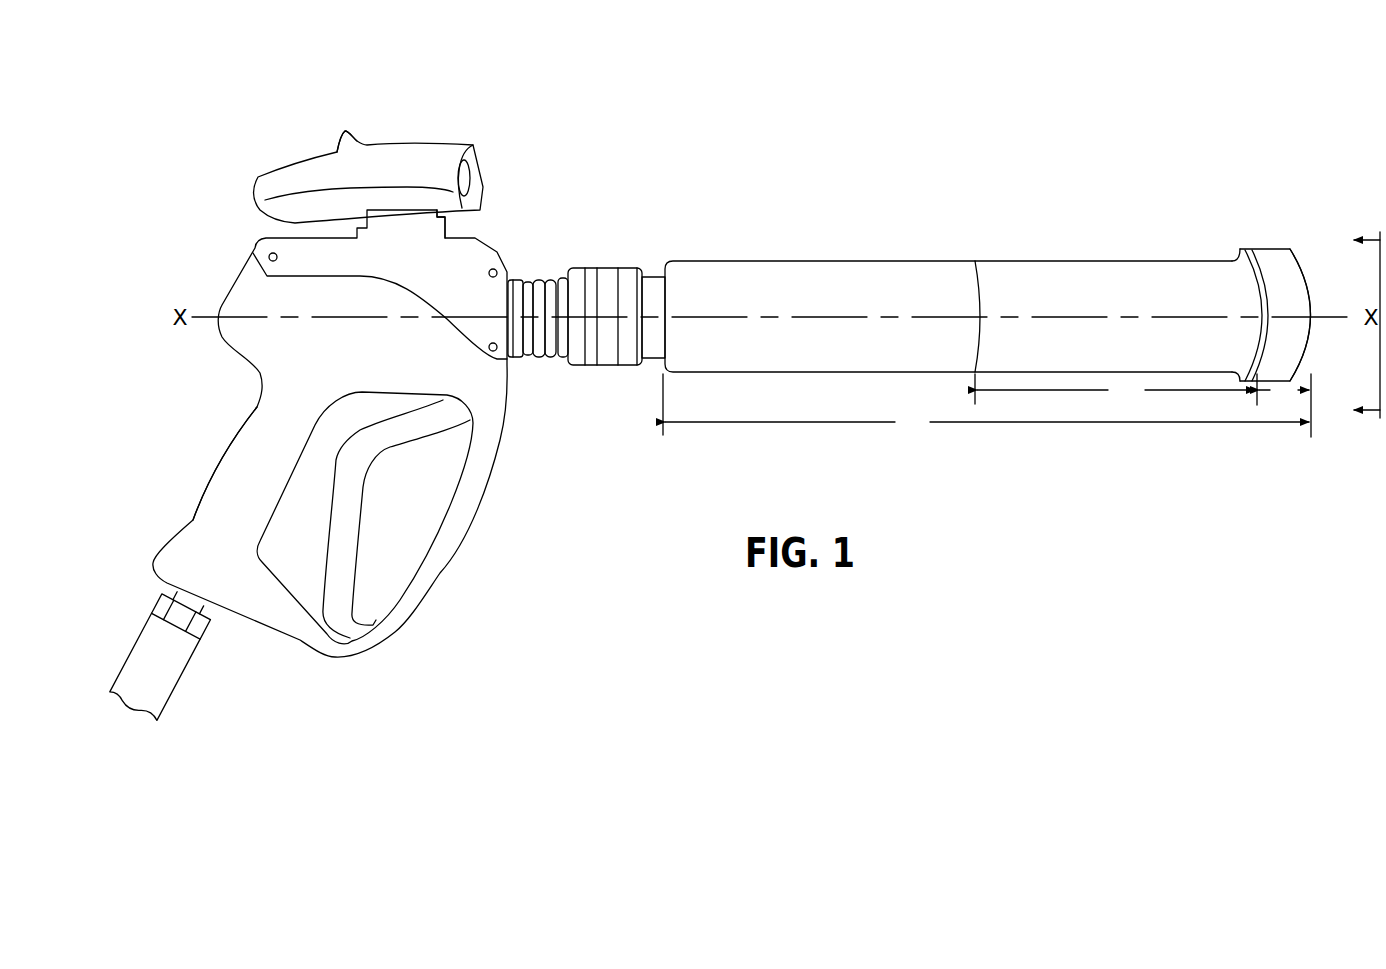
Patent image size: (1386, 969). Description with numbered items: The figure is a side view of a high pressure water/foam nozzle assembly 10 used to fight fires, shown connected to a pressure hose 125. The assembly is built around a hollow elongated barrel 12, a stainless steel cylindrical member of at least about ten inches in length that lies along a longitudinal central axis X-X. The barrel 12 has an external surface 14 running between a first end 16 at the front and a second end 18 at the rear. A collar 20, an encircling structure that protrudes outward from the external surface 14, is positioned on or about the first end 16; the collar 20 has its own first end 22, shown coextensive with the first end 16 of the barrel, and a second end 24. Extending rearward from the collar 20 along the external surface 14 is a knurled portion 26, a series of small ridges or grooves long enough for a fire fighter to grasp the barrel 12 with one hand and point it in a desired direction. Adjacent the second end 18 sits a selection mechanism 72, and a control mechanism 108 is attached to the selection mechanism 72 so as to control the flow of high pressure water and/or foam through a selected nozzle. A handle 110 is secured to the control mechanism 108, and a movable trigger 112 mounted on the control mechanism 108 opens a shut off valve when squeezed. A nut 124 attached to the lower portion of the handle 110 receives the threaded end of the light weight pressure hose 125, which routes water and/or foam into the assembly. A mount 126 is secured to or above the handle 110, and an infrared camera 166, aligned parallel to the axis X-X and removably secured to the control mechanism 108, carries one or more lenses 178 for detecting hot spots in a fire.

The high pressure water/foam nozzle assembly 10 is at (1200, 108).
The hollow elongated barrel 12 is at (902, 256).
The external surface 14 is at (771, 273).
The first end 16 is at (1313, 310).
The second end 18 is at (662, 272).
The collar 20 is at (1292, 244).
The first end of collar 22 is at (1304, 266).
The second end of collar 24 is at (1238, 251).
The knurled portion 26 is at (1085, 280).
The selection mechanism 72 is at (601, 263).
The control mechanism 108 is at (506, 240).
The handle 110 is at (228, 464).
The trigger 112 is at (350, 519).
The nut 124 is at (160, 607).
The pressure hose 125 is at (162, 683).
The mount 126 is at (462, 222).
The infrared camera 166 is at (422, 137).
The lens 178 is at (350, 143).